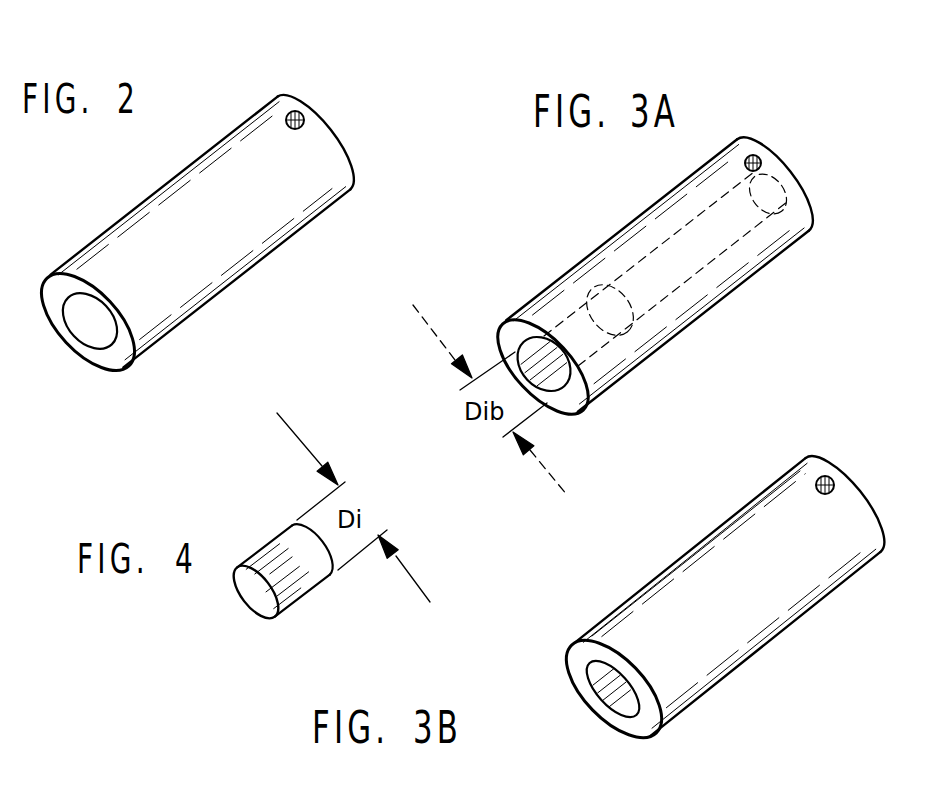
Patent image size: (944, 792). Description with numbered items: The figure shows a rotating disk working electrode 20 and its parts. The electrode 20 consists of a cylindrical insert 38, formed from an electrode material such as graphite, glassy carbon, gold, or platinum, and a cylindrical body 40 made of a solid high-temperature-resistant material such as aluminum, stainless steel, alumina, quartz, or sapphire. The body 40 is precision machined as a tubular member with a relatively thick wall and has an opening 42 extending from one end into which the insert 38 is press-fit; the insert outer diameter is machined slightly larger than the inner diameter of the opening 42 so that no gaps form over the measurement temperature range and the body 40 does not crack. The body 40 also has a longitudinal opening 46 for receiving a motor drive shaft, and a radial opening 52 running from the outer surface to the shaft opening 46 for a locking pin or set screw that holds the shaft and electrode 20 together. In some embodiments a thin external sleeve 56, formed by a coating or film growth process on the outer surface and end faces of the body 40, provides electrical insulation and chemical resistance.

In FIG. 2, the working electrode 20 is at (285, 92).
In FIG. 2, the insert 38 is at (87, 328).
In FIG. 4, the insert 38 is at (263, 543).
In FIG. 2, the body 40 is at (187, 253).
In FIG. 3A, the body 40 is at (762, 267).
In FIG. 3B, the body 40 is at (732, 608).
In FIG. 3A, the opening 42 is at (536, 366).
In FIG. 3B, the opening 42 is at (582, 678).
In FIG. 3A, the longitudinal opening 46 is at (812, 198).
In FIG. 2, the radial opening 52 is at (307, 118).
In FIG. 3A, the radial opening 52 is at (760, 165).
In FIG. 3B, the radial opening 52 is at (836, 477).
In FIG. 3B, the external sleeve 56 is at (757, 495).